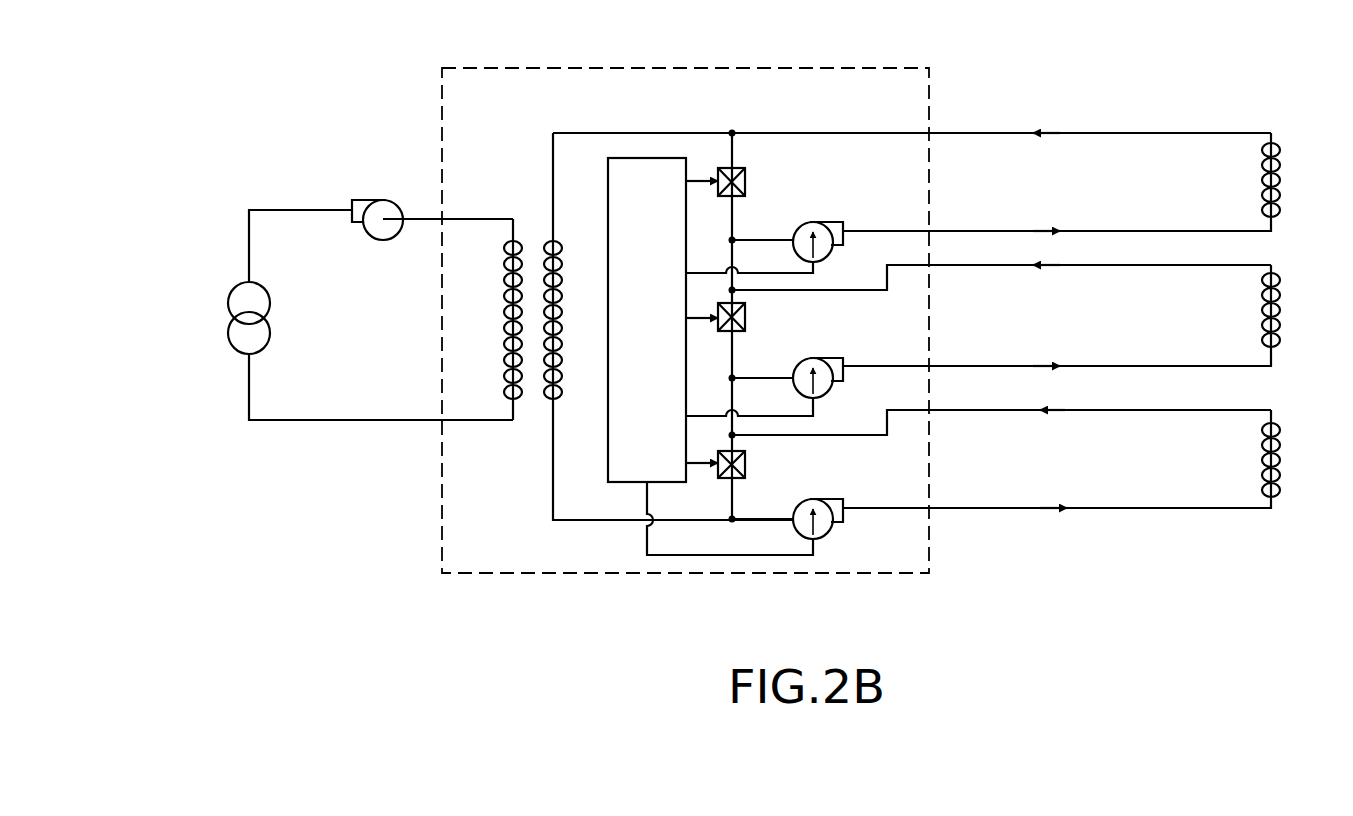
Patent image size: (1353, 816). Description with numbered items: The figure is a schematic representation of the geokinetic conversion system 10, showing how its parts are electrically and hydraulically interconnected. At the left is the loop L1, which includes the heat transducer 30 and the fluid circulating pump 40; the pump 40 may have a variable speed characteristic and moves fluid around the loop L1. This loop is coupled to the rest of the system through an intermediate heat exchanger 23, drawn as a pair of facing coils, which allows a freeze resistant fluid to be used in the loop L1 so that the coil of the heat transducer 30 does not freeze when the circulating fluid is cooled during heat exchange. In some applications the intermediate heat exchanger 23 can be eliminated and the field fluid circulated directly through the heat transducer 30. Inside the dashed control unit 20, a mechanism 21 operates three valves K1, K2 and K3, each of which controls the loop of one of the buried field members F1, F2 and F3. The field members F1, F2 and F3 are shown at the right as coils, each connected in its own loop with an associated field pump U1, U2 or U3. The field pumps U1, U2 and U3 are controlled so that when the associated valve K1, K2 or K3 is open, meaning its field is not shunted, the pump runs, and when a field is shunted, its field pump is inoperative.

The geokinetic conversion system 10 is at (675, 34).
The control unit 20 is at (930, 70).
The mechanism 21 is at (608, 178).
The intermediate heat exchanger 23 is at (522, 230).
The heat transducer 30 is at (230, 320).
The fluid circulating pump 40 is at (385, 206).
The loop L1 is at (338, 432).
The valve K1 is at (747, 469).
The valve K2 is at (747, 324).
The valve K3 is at (747, 187).
The field pump U1 is at (825, 500).
The field pump U2 is at (825, 358).
The field pump U3 is at (820, 222).
The field member F1 is at (1283, 451).
The field member F2 is at (1283, 309).
The field member F3 is at (1283, 181).